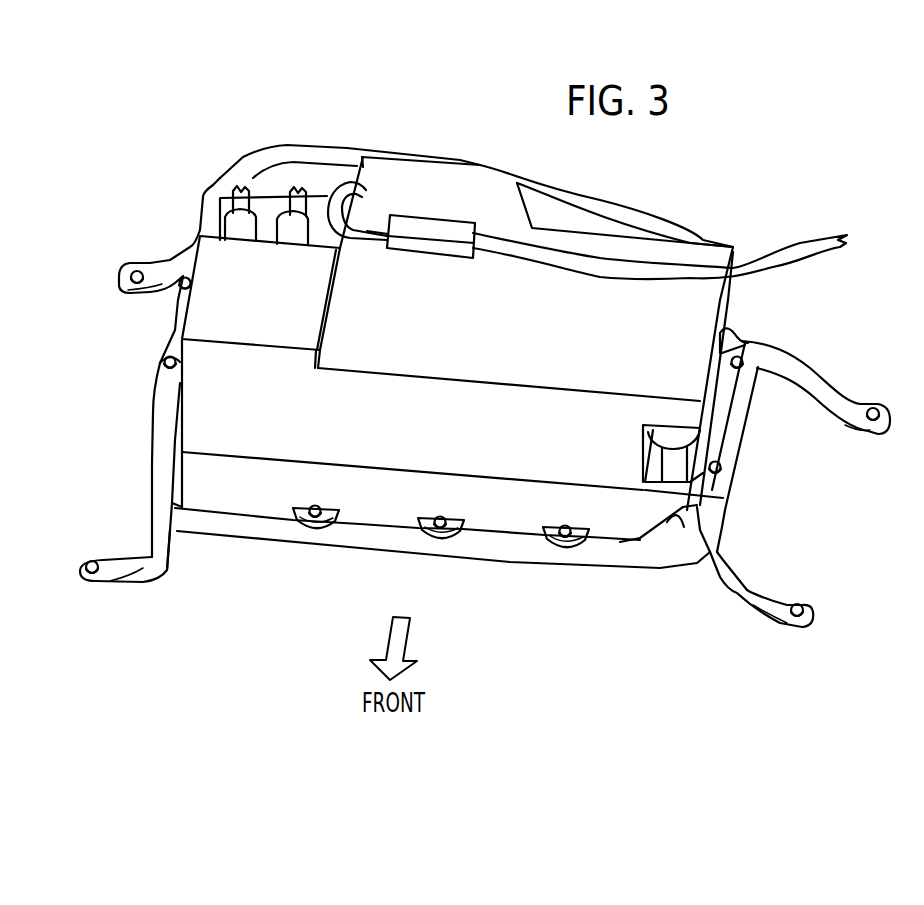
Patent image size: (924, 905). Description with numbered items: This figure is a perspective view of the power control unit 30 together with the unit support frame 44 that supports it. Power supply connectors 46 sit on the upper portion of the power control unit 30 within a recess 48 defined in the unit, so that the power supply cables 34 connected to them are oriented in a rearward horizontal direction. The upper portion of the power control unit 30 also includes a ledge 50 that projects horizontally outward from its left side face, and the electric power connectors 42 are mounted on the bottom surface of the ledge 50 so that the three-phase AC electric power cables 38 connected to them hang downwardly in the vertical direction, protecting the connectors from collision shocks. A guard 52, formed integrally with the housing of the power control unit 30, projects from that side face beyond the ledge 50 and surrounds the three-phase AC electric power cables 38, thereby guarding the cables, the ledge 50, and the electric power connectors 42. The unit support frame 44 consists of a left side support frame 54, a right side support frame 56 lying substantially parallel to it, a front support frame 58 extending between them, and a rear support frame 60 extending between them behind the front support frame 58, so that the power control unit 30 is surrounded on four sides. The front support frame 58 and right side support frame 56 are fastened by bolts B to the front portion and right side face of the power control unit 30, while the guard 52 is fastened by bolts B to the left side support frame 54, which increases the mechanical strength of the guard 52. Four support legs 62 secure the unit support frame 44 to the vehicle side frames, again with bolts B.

The power control unit 30 is at (440, 172).
The power supply cables 34 is at (310, 187).
The three-phase AC electric power cables 38 is at (673, 463).
The electric power connectors 42 is at (660, 433).
The unit support frame 44 is at (333, 553).
The power supply connectors 46 is at (285, 238).
The recess 48 is at (326, 197).
The ledge 50 is at (703, 299).
The guard 52 is at (727, 422).
The left side support frame 54 is at (713, 518).
The right side support frame 56 is at (155, 466).
The front support frame 58 is at (508, 548).
The rear support frame 60 is at (590, 200).
The support legs 62 is at (148, 268).
The bolts B is at (180, 288).